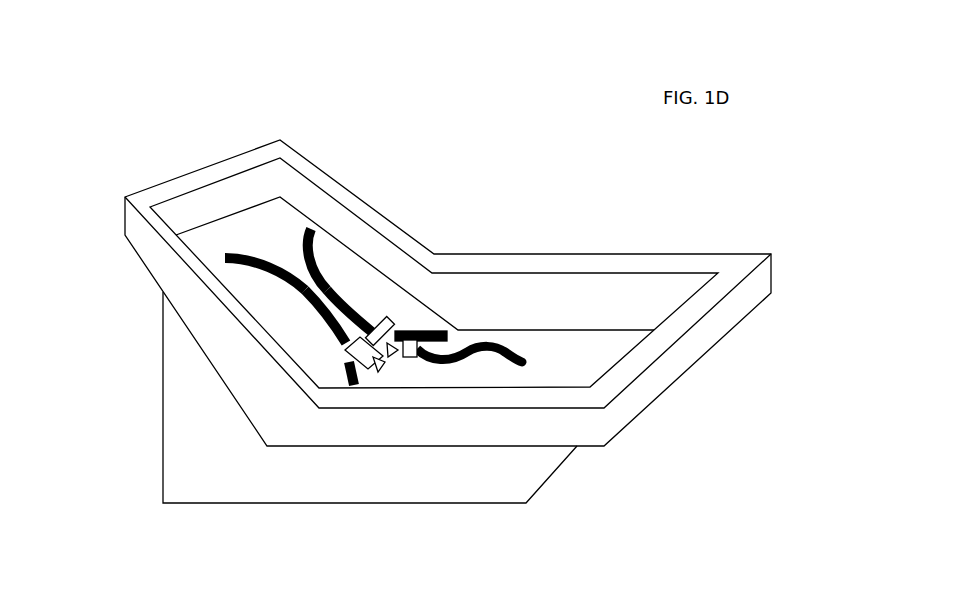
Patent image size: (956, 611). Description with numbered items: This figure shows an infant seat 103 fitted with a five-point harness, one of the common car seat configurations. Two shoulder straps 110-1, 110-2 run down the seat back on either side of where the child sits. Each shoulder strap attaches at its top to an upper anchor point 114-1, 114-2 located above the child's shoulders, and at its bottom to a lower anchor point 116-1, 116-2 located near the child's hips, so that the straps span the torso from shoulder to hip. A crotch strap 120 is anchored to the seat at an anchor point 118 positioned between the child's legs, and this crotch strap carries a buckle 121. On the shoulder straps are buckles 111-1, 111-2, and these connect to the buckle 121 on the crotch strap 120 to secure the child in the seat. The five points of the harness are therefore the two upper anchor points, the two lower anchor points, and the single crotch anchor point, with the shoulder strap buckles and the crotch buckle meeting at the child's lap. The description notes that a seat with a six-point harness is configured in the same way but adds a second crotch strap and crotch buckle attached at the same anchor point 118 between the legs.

The infant seat 103 is at (230, 228).
The upper anchor point 114-1 is at (206, 268).
The upper anchor point 114-2 is at (319, 211).
The shoulder strap 110-1 is at (286, 312).
The shoulder strap 110-2 is at (358, 282).
The buckle 111-1 is at (329, 361).
The buckle 111-2 is at (402, 309).
The lower anchor point 116-1 is at (330, 396).
The lower anchor point 116-2 is at (468, 322).
The anchor point 118 is at (538, 360).
The crotch strap 120 is at (494, 365).
The buckle 121 is at (425, 376).